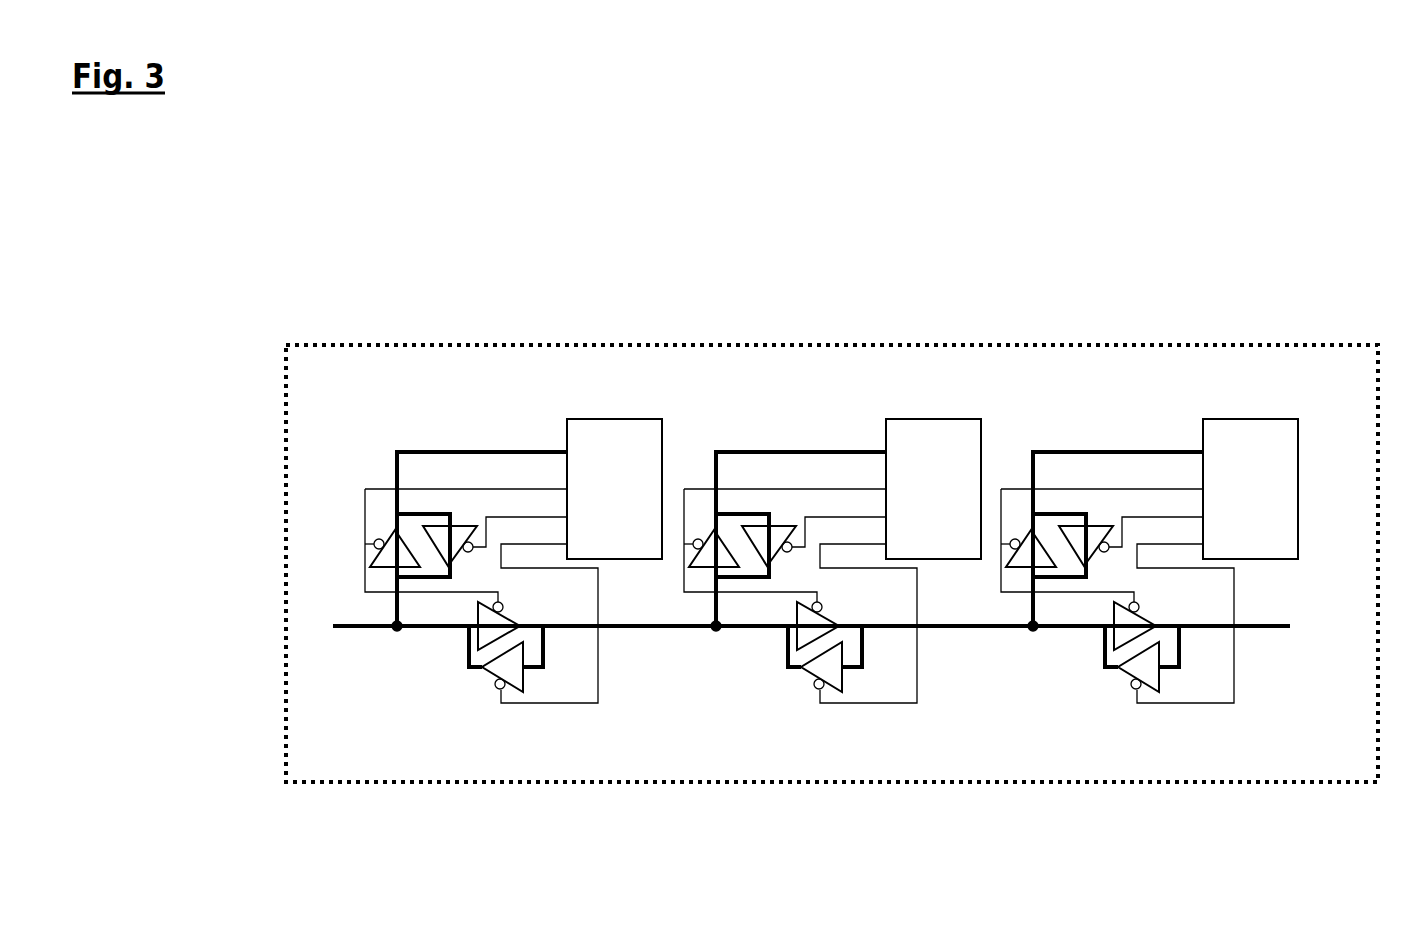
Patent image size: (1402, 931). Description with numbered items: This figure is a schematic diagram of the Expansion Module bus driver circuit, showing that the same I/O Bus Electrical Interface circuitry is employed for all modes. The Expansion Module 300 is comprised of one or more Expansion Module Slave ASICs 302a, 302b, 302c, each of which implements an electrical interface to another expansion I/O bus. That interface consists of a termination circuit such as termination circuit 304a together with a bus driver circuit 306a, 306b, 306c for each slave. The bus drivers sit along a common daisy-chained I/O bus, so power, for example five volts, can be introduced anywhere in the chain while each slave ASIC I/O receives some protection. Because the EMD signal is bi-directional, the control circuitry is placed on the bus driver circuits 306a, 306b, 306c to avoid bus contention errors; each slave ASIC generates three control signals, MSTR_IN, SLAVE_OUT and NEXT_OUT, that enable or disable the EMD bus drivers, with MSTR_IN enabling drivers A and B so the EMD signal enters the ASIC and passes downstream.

The Expansion Module 300 is at (858, 844).
The Expansion Module Slave ASIC 302a is at (617, 429).
The Expansion Module Slave ASIC 302b is at (933, 416).
The Expansion Module Slave ASIC 302c is at (1230, 416).
The termination circuit 304a is at (430, 512).
The bus driver circuit 306a is at (470, 640).
The bus driver circuit 306b is at (833, 654).
The bus driver circuit 306c is at (1150, 654).